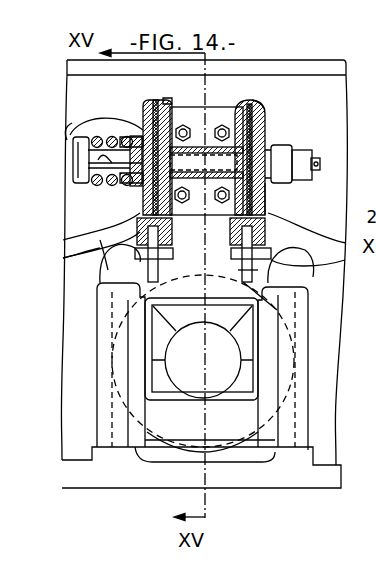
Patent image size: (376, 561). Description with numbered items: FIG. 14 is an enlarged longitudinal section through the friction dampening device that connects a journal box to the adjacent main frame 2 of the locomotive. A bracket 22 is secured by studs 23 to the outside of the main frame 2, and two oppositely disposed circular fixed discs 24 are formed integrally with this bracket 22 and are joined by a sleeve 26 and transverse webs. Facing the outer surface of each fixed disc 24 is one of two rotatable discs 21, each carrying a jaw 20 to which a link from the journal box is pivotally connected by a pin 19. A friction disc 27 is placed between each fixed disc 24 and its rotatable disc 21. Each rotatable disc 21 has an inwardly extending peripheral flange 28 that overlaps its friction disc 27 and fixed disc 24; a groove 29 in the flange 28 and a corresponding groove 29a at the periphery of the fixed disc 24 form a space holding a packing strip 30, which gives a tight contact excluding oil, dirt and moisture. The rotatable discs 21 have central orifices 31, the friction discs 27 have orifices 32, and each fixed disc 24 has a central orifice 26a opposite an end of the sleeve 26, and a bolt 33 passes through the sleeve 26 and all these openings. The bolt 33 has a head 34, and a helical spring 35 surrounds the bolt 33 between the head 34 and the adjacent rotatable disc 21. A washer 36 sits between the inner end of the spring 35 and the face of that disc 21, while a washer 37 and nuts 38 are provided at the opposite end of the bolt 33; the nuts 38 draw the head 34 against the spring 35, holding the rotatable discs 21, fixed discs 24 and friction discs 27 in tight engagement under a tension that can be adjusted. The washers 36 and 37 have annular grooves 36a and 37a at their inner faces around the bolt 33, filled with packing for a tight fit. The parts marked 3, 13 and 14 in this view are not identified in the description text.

The main frame 2 is at (310, 68).
The base 3 is at (318, 376).
The ball 13 is at (203, 360).
The ball housing 14 is at (238, 333).
The pin 19 is at (268, 260).
The jaw 20 is at (120, 262).
The rotatable disc 21 is at (143, 110).
The bracket 22 is at (218, 115).
The stud 23 is at (218, 125).
The fixed disc 24 is at (263, 101).
The sleeve 26 is at (367, 184).
The central orifice 26a is at (102, 163).
The friction disc 27 is at (261, 121).
The peripheral flange 28 is at (173, 100).
The groove 29 is at (160, 100).
The groove 29a is at (173, 104).
The packing strip 30 is at (238, 219).
The orifice 31 is at (143, 131).
The orifice 32 is at (266, 138).
The bolt 33 is at (160, 162).
The head 34 is at (73, 140).
The helical spring 35 is at (140, 130).
The washer 36 is at (133, 210).
The annular groove 36a is at (140, 190).
The washer 37 is at (291, 185).
The annular groove 37a is at (266, 185).
The nut 38 is at (322, 146).